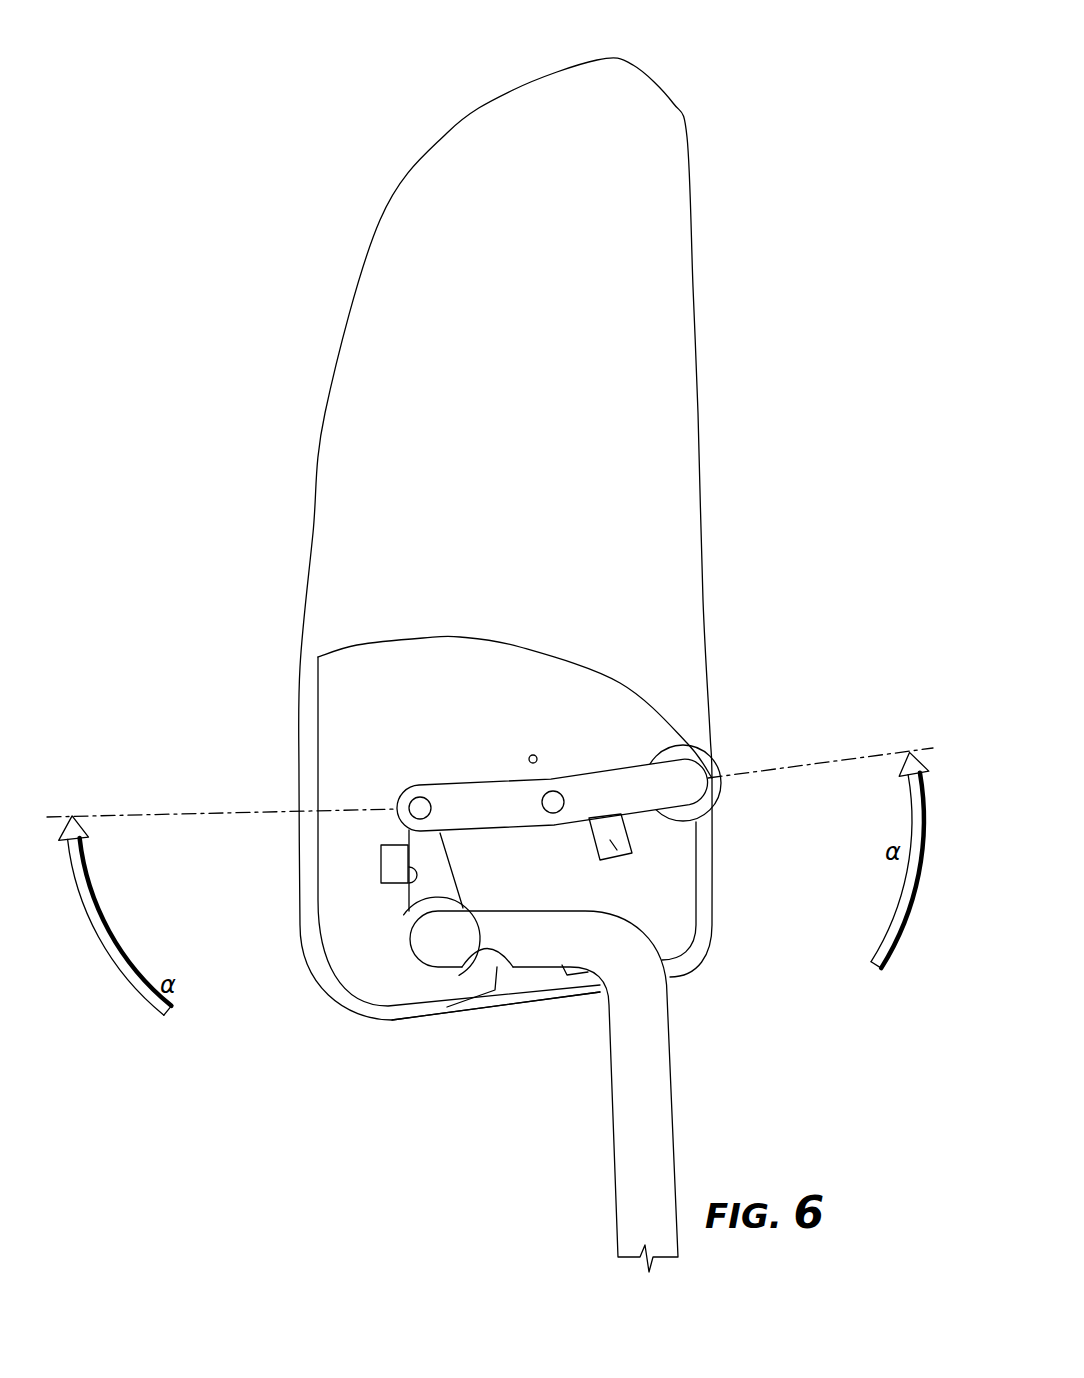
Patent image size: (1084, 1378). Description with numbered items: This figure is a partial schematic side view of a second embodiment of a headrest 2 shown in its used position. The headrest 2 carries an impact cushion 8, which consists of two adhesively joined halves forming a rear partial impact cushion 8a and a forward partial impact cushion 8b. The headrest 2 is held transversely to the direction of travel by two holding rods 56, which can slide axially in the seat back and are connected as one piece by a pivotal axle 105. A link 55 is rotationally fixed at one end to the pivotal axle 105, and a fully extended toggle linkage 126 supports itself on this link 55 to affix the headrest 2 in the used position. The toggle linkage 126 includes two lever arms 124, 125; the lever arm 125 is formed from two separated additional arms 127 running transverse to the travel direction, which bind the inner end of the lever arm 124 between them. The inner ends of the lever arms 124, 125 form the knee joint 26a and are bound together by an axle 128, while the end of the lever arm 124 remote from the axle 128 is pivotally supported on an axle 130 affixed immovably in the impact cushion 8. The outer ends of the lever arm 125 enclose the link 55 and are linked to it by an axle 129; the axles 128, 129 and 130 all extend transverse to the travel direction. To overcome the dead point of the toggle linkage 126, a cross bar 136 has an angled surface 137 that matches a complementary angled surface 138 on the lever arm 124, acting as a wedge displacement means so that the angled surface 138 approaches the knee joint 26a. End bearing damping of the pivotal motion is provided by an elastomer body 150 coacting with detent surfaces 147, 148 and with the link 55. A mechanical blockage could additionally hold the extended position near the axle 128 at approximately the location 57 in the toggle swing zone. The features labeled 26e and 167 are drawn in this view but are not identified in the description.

The headrest 2 is at (530, 514).
The impact cushion 8 is at (660, 237).
The rear partial impact cushion 8a is at (345, 800).
The forward partial impact cushion 8b is at (668, 848).
The knee joint 26a is at (533, 813).
The lower plate portion 26e is at (538, 873).
The link 55 is at (410, 926).
The holding rods 56 is at (655, 1087).
The location 57 is at (570, 760).
The pivotal axle 105 is at (373, 980).
The lever arm 124 is at (668, 752).
The lever arm 125 is at (468, 808).
The toggle linkage 126 is at (602, 767).
The additional arms 127 is at (505, 802).
The axle 128 is at (553, 782).
The axle 129 is at (418, 800).
The axle 130 is at (690, 785).
The cross bar 136 is at (615, 825).
The angled surface 137 is at (622, 815).
The angled surface 138 is at (593, 815).
The detent surface 147 is at (393, 860).
The detent surface 148 is at (450, 980).
The elastomer body 150 is at (510, 983).
The plate edge 167 is at (427, 893).